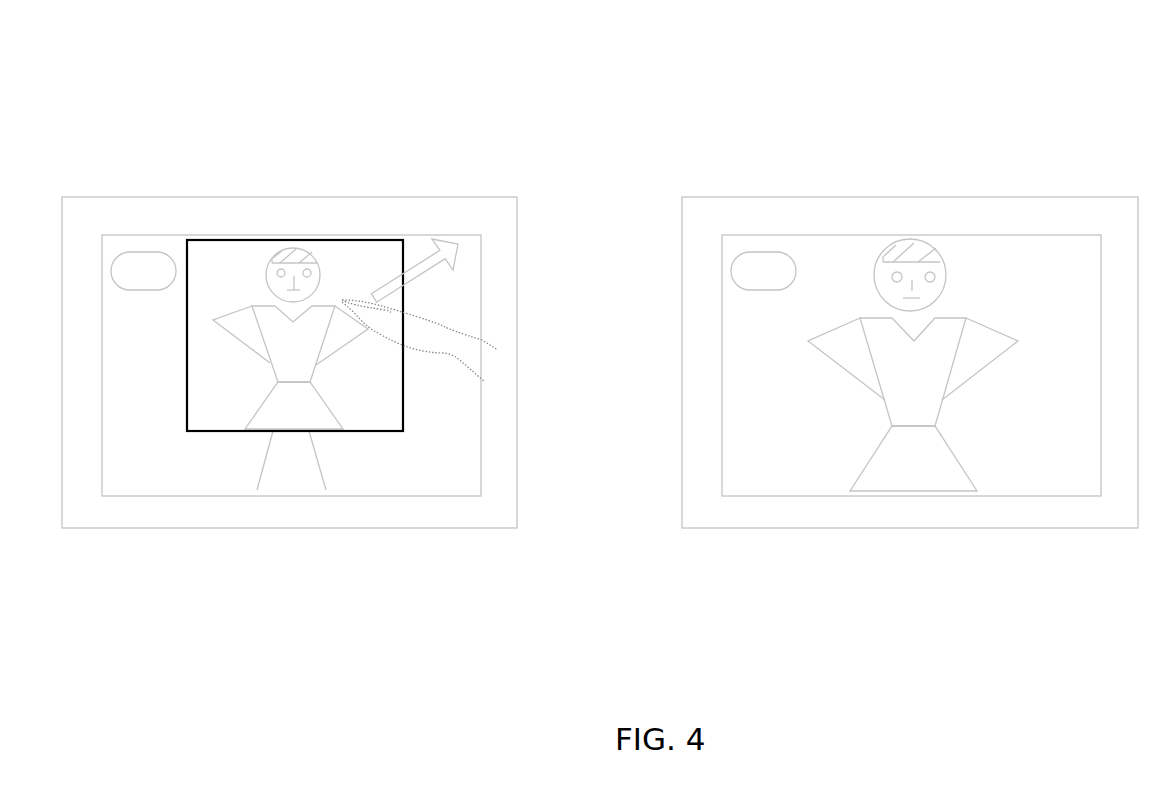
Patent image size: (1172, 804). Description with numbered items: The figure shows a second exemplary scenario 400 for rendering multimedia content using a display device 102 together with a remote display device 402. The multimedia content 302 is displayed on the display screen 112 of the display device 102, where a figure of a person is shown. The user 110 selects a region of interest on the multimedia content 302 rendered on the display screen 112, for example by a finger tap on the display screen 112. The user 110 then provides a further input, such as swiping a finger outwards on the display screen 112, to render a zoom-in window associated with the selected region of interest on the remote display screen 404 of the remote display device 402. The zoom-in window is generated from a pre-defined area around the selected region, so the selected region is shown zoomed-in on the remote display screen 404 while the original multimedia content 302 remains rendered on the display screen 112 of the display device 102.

The second exemplary scenario 400 is at (975, 59).
The display device 102 is at (383, 197).
The remote display device 402 is at (1002, 197).
The multimedia content 302 is at (150, 488).
The display screen 112 is at (258, 237).
The user 110 is at (487, 343).
The remote display screen 404 is at (877, 237).